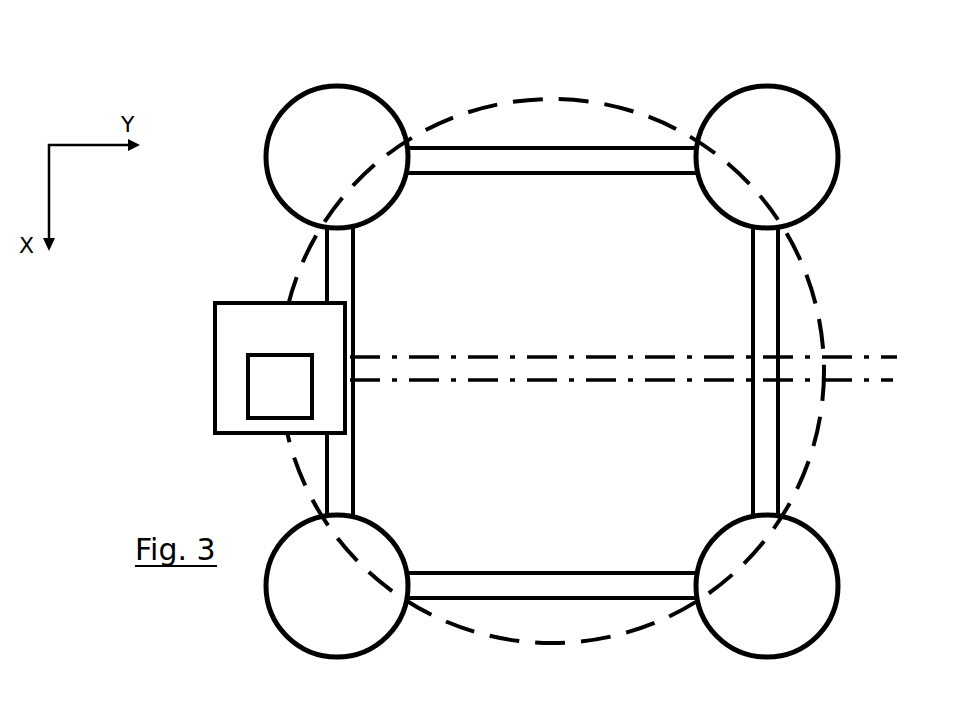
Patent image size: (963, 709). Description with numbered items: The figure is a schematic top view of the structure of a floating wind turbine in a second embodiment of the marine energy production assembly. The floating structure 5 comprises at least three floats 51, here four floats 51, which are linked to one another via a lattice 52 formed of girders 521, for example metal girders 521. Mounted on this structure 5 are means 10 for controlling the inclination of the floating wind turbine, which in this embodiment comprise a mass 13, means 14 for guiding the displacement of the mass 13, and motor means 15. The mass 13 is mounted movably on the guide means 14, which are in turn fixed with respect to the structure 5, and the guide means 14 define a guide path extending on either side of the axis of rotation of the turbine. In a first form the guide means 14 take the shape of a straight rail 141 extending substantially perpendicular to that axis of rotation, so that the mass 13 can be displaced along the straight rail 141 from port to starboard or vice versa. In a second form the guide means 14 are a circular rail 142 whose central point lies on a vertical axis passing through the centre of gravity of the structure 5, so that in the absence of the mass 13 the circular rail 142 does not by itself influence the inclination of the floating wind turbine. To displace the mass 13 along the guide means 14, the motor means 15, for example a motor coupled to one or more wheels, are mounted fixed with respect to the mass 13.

The floating structure 5 is at (777, 66).
The float 51 is at (172, 0).
The lattice 52 is at (591, 114).
The girder 521 is at (538, 163).
The means for controlling the inclination 10 is at (180, 380).
The mass 13 is at (232, 323).
The motor means 15 is at (273, 402).
The guide means 14 is at (596, 343).
The straight rail 141 is at (514, 341).
The circular rail 142 is at (596, 343).